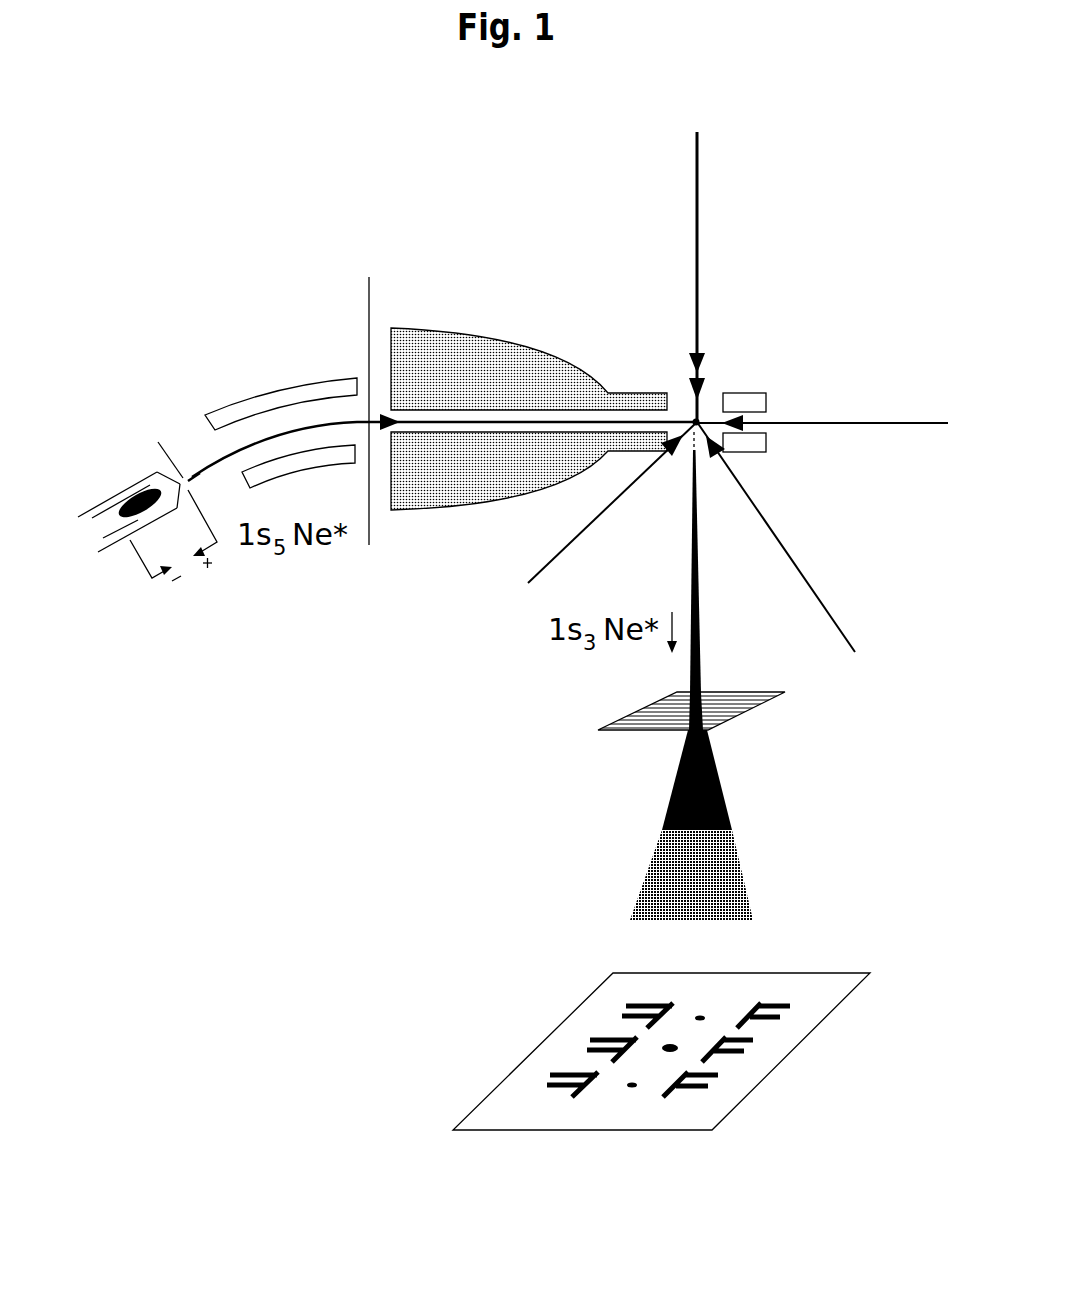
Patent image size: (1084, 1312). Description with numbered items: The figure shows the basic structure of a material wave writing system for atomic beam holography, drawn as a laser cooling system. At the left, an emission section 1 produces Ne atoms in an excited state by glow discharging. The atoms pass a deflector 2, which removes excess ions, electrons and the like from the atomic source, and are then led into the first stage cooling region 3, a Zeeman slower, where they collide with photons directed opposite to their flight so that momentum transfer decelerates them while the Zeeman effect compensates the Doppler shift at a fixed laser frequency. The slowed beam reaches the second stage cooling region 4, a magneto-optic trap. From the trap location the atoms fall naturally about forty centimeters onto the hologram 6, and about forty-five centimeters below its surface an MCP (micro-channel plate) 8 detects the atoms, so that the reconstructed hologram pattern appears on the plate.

The emission section 1 is at (112, 493).
The deflector 2 is at (238, 400).
The first stage cooling region (Zeeman slower) 3 is at (467, 333).
The second stage cooling region (Magnet-Optic trap) 4 is at (755, 393).
The hologram 6 is at (730, 718).
The MCP (micro-channel plate) 8 is at (740, 1093).